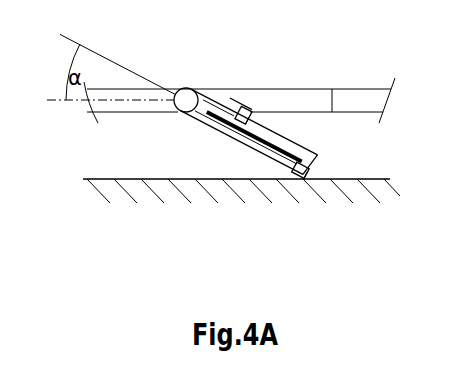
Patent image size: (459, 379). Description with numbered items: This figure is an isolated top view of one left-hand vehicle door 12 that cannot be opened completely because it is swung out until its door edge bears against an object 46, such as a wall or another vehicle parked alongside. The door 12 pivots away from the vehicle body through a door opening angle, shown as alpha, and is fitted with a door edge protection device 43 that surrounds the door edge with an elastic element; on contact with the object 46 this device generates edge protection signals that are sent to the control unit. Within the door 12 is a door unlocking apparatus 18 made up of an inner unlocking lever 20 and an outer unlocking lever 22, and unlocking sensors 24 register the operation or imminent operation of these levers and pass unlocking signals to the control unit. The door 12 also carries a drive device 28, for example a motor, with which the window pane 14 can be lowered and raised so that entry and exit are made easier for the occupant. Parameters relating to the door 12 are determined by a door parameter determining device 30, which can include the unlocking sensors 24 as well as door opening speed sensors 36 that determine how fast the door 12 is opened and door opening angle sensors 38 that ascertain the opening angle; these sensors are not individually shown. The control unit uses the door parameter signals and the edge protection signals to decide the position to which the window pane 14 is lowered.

The vehicle door 12 is at (267, 187).
The window pane 14 is at (317, 160).
The door unlocking apparatus 18 is at (264, 140).
The inner unlocking lever 20 is at (242, 107).
The outer unlocking lever 22 is at (268, 168).
The unlocking sensor 24 is at (253, 117).
The drive device 28 is at (228, 135).
The door parameter determining device 30 is at (192, 59).
The door opening speed sensor 36 is at (192, 59).
The door opening angle sensor 38 is at (186, 100).
The door edge protection device 43 is at (323, 182).
The object 46 is at (157, 193).